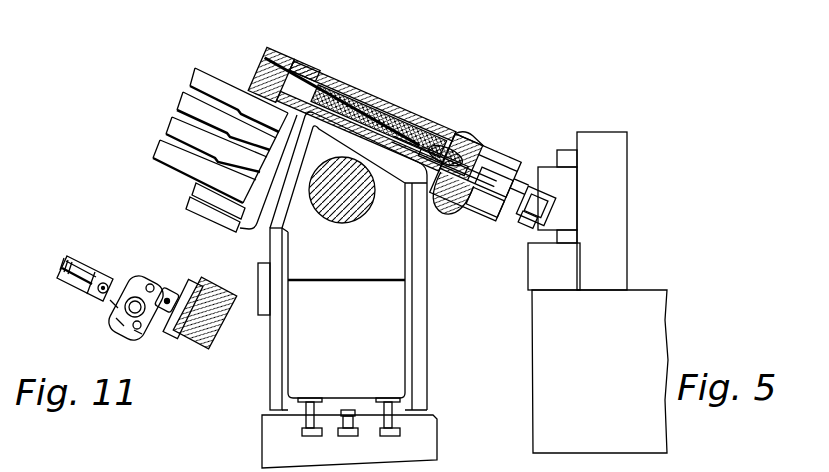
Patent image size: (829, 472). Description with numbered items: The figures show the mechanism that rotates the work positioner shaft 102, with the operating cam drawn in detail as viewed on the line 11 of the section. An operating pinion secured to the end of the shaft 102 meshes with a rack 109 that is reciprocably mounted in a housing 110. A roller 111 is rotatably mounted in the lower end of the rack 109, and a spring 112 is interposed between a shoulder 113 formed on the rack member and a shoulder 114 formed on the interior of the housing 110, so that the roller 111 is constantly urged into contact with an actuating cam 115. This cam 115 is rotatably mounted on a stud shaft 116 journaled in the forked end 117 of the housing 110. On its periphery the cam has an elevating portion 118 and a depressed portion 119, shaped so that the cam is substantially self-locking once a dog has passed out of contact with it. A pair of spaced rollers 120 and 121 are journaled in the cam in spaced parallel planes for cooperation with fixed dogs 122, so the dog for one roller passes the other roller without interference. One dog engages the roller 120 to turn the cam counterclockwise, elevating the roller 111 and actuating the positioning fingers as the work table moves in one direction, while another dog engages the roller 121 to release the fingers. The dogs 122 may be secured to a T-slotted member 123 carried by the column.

In FIG. 5, the frame 11 is at (434, 186).
In FIG. 5, the shaft 102 is at (298, 46).
In FIG. 5, the rack 109 is at (292, 42).
In FIG. 5, the housing 110 is at (364, 88).
In FIG. 5, the roller 111 is at (490, 142).
In FIG. 11, the roller 111 is at (88, 302).
In FIG. 5, the spring 112 is at (385, 95).
In FIG. 5, the shoulder 113 is at (405, 115).
In FIG. 5, the shoulder 114 is at (350, 80).
In FIG. 5, the actuating cam 115 is at (493, 160).
In FIG. 11, the actuating cam 115 is at (118, 320).
In FIG. 11, the stud shaft 116 is at (137, 298).
In FIG. 5, the forked end 117 is at (468, 212).
In FIG. 11, the elevating portion 118 is at (128, 280).
In FIG. 11, the depressed portion 119 is at (112, 305).
In FIG. 11, the roller 120 is at (160, 288).
In FIG. 11, the roller 121 is at (137, 330).
In FIG. 5, the fixed dogs 122 is at (532, 190).
In FIG. 11, the fixed dogs 122 is at (181, 289).
In FIG. 5, the T-slotted member 123 is at (528, 231).
In FIG. 11, the T-slotted member 123 is at (182, 348).